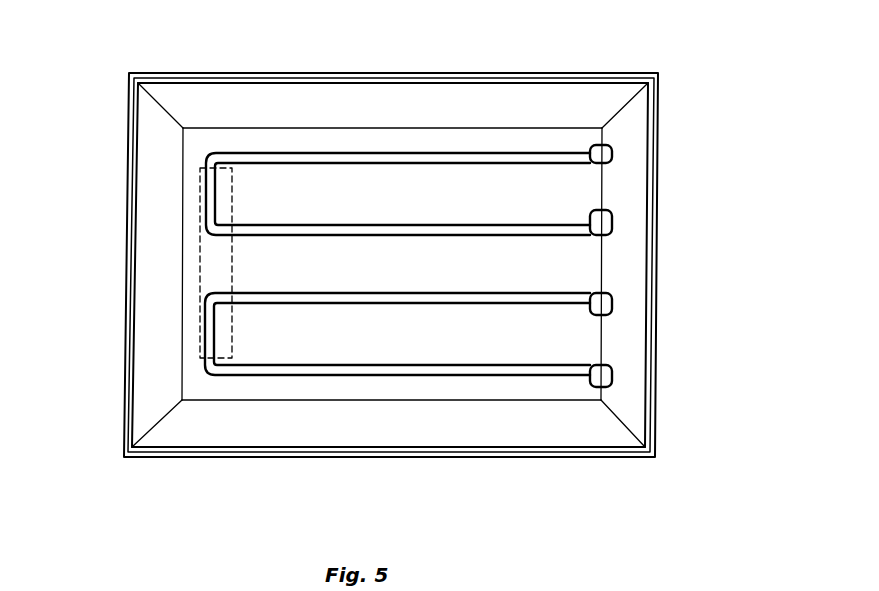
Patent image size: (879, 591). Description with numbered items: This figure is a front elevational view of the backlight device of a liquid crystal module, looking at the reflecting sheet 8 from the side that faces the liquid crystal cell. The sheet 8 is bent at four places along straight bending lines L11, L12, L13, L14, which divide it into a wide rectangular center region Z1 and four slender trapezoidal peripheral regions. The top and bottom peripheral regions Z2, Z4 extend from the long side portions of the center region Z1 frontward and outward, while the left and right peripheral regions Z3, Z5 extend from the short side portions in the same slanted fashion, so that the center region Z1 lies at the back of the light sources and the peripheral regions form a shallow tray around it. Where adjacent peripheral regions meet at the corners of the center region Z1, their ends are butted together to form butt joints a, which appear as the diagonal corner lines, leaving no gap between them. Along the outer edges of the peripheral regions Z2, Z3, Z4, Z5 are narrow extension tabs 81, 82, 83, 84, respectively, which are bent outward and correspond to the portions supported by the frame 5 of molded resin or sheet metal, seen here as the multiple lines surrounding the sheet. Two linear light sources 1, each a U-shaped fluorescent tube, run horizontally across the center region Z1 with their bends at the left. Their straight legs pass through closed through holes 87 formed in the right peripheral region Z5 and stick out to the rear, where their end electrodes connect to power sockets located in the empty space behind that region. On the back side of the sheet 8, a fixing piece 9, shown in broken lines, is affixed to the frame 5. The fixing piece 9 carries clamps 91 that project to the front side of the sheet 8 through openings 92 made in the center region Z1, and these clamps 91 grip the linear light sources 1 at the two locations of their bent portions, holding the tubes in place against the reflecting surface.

The linear light source 1 is at (497, 153).
The frame 5 is at (420, 78).
The sheet 8 is at (606, 75).
The fixing piece 9 is at (233, 268).
The extension tab 81 is at (340, 78).
The extension tab 82 is at (130, 232).
The extension tab 83 is at (347, 458).
The extension tab 84 is at (656, 247).
The through hole 87 is at (596, 146).
The clamp 91 is at (222, 222).
The opening 92 is at (203, 233).
The bending line L11 is at (262, 127).
The bending line L12 is at (188, 340).
The bending line L13 is at (445, 401).
The bending line L14 is at (601, 333).
The butt joint a is at (168, 112).
The center region Z1 is at (414, 276).
The top peripheral region Z2 is at (345, 118).
The left peripheral region Z3 is at (182, 288).
The bottom peripheral region Z4 is at (417, 443).
The right peripheral region Z5 is at (644, 281).